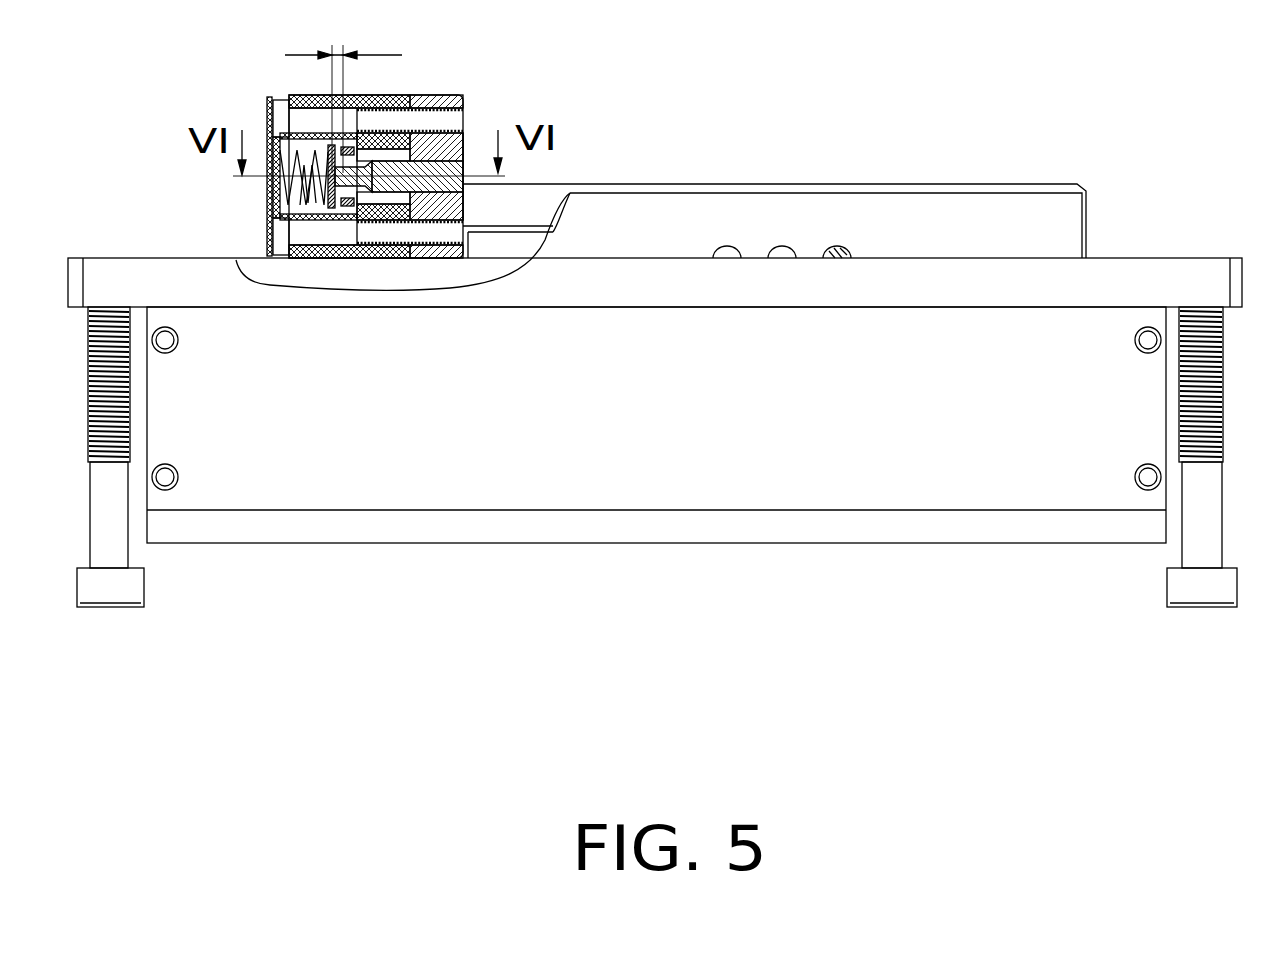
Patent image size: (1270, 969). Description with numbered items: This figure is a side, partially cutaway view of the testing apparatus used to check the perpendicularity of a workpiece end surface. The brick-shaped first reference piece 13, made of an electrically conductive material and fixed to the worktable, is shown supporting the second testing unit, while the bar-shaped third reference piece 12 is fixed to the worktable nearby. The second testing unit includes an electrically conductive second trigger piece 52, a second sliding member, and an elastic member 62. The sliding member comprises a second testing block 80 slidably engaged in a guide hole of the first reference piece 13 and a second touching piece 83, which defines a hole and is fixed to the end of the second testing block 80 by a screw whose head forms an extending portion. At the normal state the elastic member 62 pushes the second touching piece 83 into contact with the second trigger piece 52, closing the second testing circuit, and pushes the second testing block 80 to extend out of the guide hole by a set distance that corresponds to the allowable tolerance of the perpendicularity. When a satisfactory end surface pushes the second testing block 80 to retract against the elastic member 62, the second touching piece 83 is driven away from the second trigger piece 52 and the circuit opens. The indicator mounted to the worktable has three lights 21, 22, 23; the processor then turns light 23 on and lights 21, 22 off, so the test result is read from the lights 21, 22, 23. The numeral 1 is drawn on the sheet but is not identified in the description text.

The base 1 is at (528, 205).
The third reference piece 12 is at (1057, 222).
The first reference piece 13 is at (450, 205).
The light 21 is at (726, 258).
The light 22 is at (782, 258).
The light 23 is at (836, 258).
The second trigger piece 52 is at (343, 210).
The elastic member 62 is at (282, 195).
The second testing block 80 is at (447, 157).
The second touching piece 83 is at (330, 207).